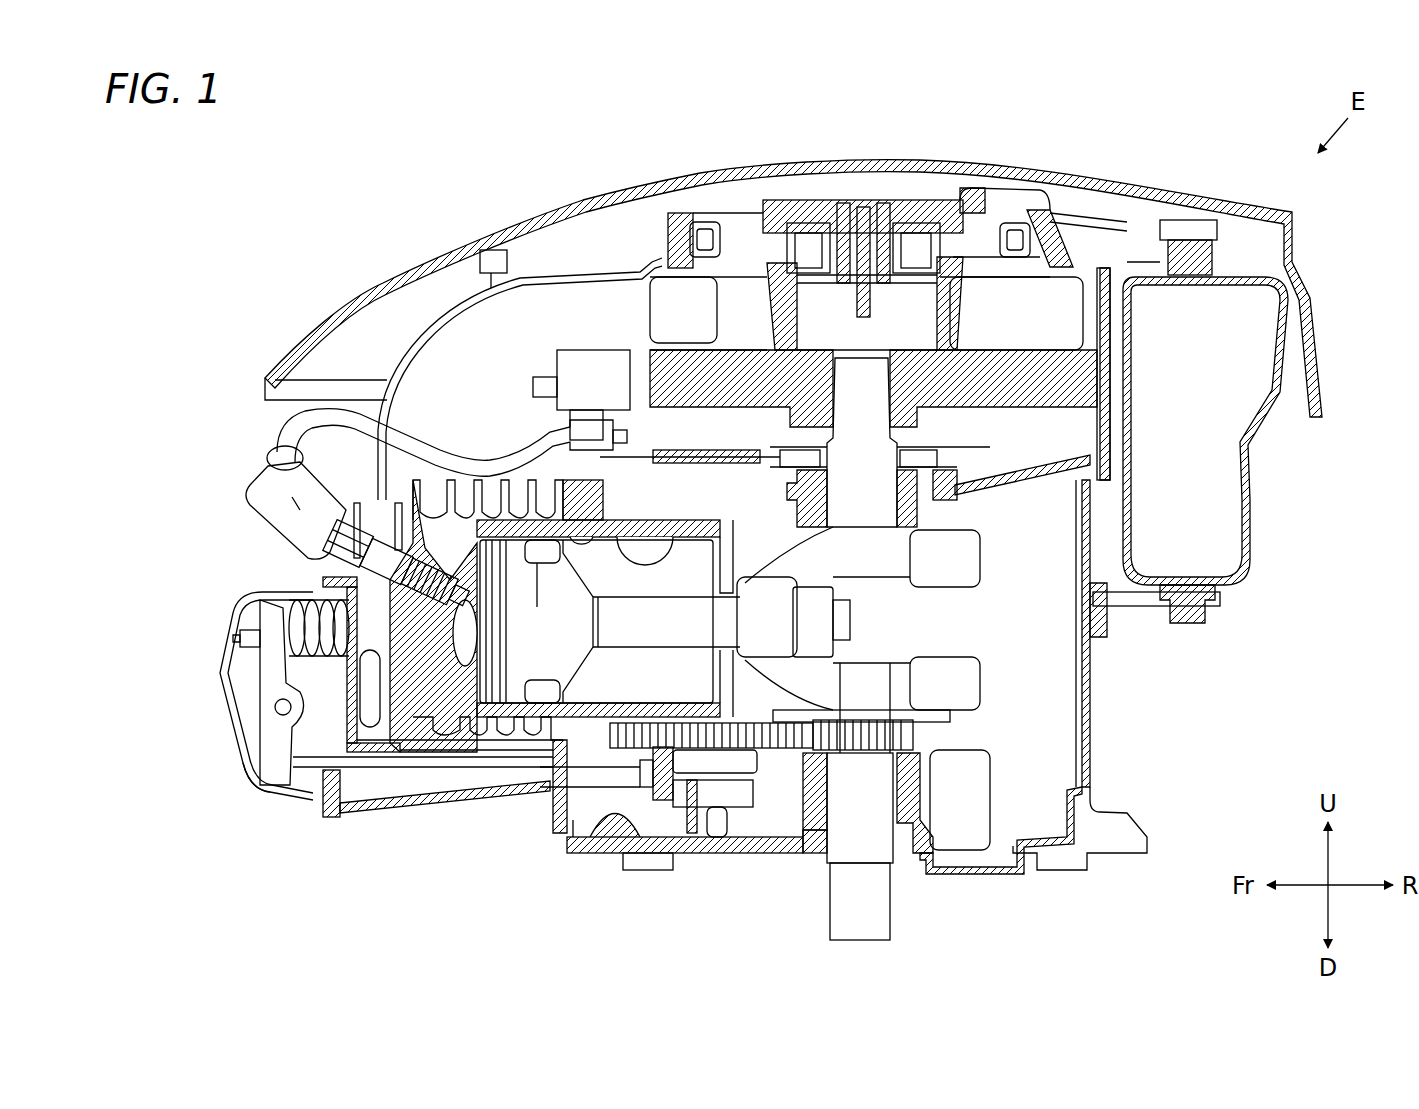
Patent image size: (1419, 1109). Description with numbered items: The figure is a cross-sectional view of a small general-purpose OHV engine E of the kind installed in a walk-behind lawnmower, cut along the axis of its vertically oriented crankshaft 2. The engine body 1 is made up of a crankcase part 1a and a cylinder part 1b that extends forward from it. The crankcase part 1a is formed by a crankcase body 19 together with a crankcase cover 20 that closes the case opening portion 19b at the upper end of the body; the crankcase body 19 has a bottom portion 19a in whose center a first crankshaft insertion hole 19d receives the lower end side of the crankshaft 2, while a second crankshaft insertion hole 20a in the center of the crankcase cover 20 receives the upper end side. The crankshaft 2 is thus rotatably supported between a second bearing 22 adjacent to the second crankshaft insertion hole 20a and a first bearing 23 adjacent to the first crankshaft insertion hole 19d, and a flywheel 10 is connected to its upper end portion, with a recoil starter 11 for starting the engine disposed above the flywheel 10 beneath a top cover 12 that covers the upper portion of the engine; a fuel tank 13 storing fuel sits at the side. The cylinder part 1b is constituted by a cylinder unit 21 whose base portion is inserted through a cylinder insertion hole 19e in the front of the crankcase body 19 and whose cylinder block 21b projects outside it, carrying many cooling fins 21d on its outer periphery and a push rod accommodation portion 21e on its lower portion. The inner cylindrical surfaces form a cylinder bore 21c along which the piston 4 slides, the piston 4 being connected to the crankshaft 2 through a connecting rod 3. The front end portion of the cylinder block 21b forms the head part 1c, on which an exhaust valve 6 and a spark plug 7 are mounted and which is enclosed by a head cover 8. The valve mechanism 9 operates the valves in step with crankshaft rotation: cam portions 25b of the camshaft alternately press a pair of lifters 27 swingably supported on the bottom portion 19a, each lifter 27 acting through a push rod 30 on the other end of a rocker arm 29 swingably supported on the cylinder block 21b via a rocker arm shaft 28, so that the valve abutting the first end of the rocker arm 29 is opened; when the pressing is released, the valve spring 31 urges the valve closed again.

The engine body 1 is at (1092, 698).
The crankcase part 1a is at (1092, 650).
The cylinder part 1b is at (480, 742).
The head part 1c is at (262, 690).
The crankshaft 2 is at (866, 907).
The connecting rod 3 is at (697, 617).
The piston 4 is at (527, 483).
The exhaust valve 6 is at (330, 580).
The spark plug 7 is at (393, 547).
The head cover 8 is at (253, 785).
The valve mechanism 9 is at (363, 777).
The flywheel 10 is at (1077, 360).
The recoil starter 11 is at (820, 207).
The top cover 12 is at (688, 182).
The fuel tank 13 is at (1253, 481).
The crankcase body 19 is at (1092, 755).
The bottom portion 19a is at (760, 840).
The case opening portion 19b is at (1120, 478).
The first crankshaft insertion hole 19d is at (890, 780).
The cylinder insertion hole 19e is at (560, 390).
The crankcase cover 20 is at (1067, 267).
The second crankshaft insertion hole 20a is at (922, 450).
The cylinder unit 21 is at (648, 470).
The cylinder block 21b is at (400, 673).
The cylinder bore 21c is at (595, 480).
The cooling fins 21d is at (503, 483).
The push rod accommodation portion 21e is at (410, 790).
The second bearing 22 is at (1017, 463).
The first bearing 23 is at (822, 842).
The cam portions 25b is at (718, 790).
The lifters 27 is at (640, 757).
The rocker arm shafts 28 is at (280, 712).
The rocker arms 29 is at (270, 675).
The push rods 30 is at (505, 790).
The valve springs 31 is at (310, 607).